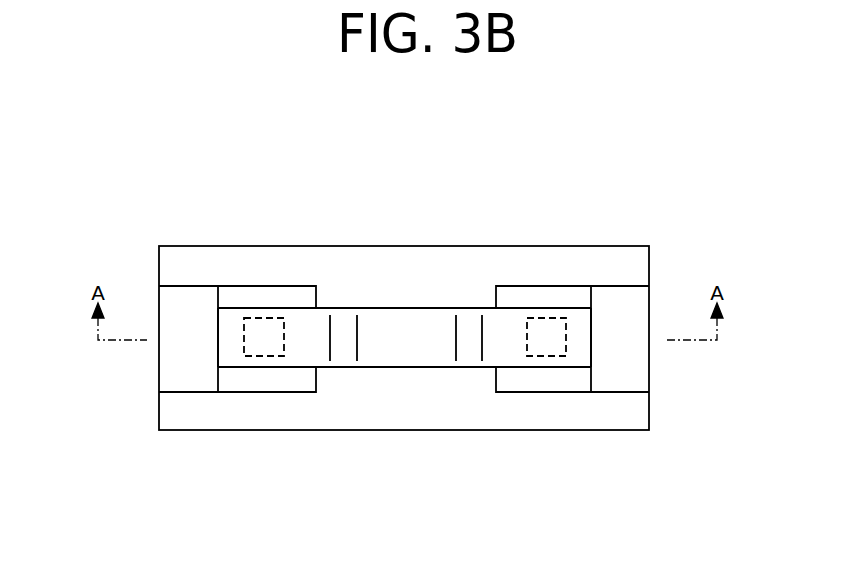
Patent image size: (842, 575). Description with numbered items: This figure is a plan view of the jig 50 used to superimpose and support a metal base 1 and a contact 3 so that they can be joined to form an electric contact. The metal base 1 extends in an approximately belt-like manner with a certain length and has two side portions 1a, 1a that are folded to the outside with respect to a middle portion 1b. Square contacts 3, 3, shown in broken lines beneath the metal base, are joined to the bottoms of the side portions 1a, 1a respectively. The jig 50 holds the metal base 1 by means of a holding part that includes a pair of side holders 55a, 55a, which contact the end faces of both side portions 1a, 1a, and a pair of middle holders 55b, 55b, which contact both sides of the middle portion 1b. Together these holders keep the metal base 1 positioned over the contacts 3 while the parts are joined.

The metal base 1 is at (480, 283).
The side portion 1a is at (290, 340).
The middle portion 1b is at (405, 343).
The contact 3 is at (258, 357).
The jig 50 is at (602, 445).
The side holder 55a is at (185, 383).
The middle holder 55b is at (408, 305).